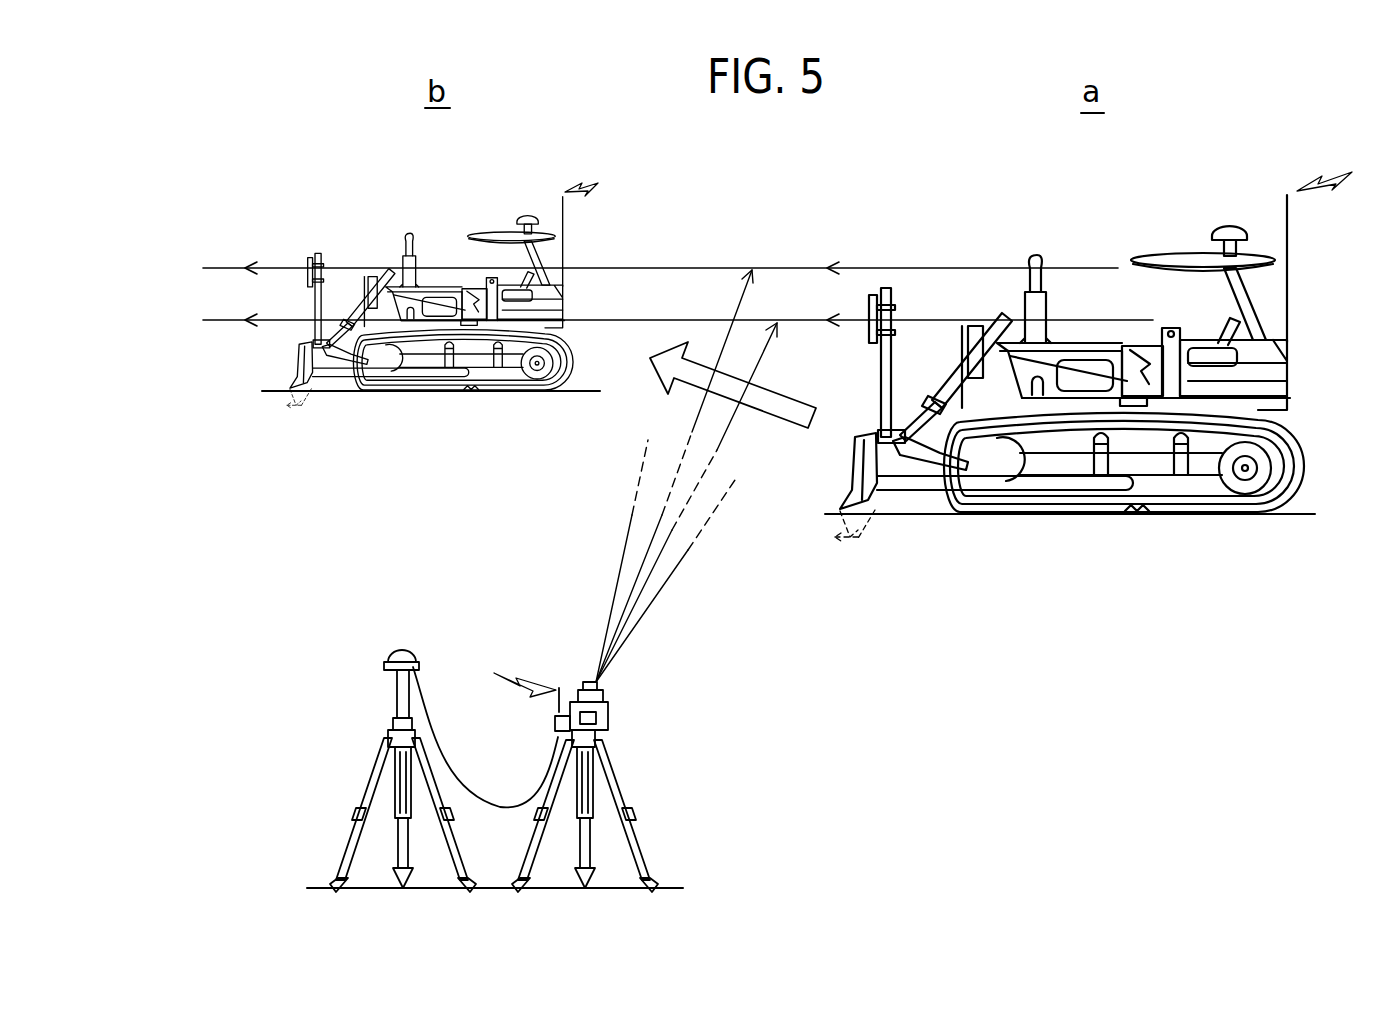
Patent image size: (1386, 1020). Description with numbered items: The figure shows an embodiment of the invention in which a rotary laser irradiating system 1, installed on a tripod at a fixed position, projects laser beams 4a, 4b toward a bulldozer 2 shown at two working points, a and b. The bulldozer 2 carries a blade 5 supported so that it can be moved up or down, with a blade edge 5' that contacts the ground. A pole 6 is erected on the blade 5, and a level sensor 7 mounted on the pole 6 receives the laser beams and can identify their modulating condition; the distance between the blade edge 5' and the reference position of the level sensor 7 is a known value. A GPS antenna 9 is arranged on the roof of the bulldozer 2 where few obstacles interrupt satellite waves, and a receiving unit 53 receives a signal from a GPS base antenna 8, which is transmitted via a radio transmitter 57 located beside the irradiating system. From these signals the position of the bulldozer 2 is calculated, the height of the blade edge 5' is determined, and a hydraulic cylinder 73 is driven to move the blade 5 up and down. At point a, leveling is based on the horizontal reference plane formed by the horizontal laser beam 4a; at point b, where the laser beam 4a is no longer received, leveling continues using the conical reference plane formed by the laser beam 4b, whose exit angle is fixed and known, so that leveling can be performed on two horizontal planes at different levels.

The rotary laser irradiating system 1 is at (610, 722).
The bulldozer 2 is at (432, 213).
The laser beam 4a is at (652, 318).
The laser beam 4b is at (232, 268).
The blade 5 is at (583, 425).
The blade edge 5' is at (581, 465).
The pole 6 is at (880, 388).
The level sensor 7 is at (308, 250).
The GPS base antenna 8 is at (404, 655).
The GPS antenna 9 is at (525, 218).
The receiving unit 53 is at (557, 232).
The radio transmitter 57 is at (556, 724).
The hydraulic cylinder 73 is at (955, 362).